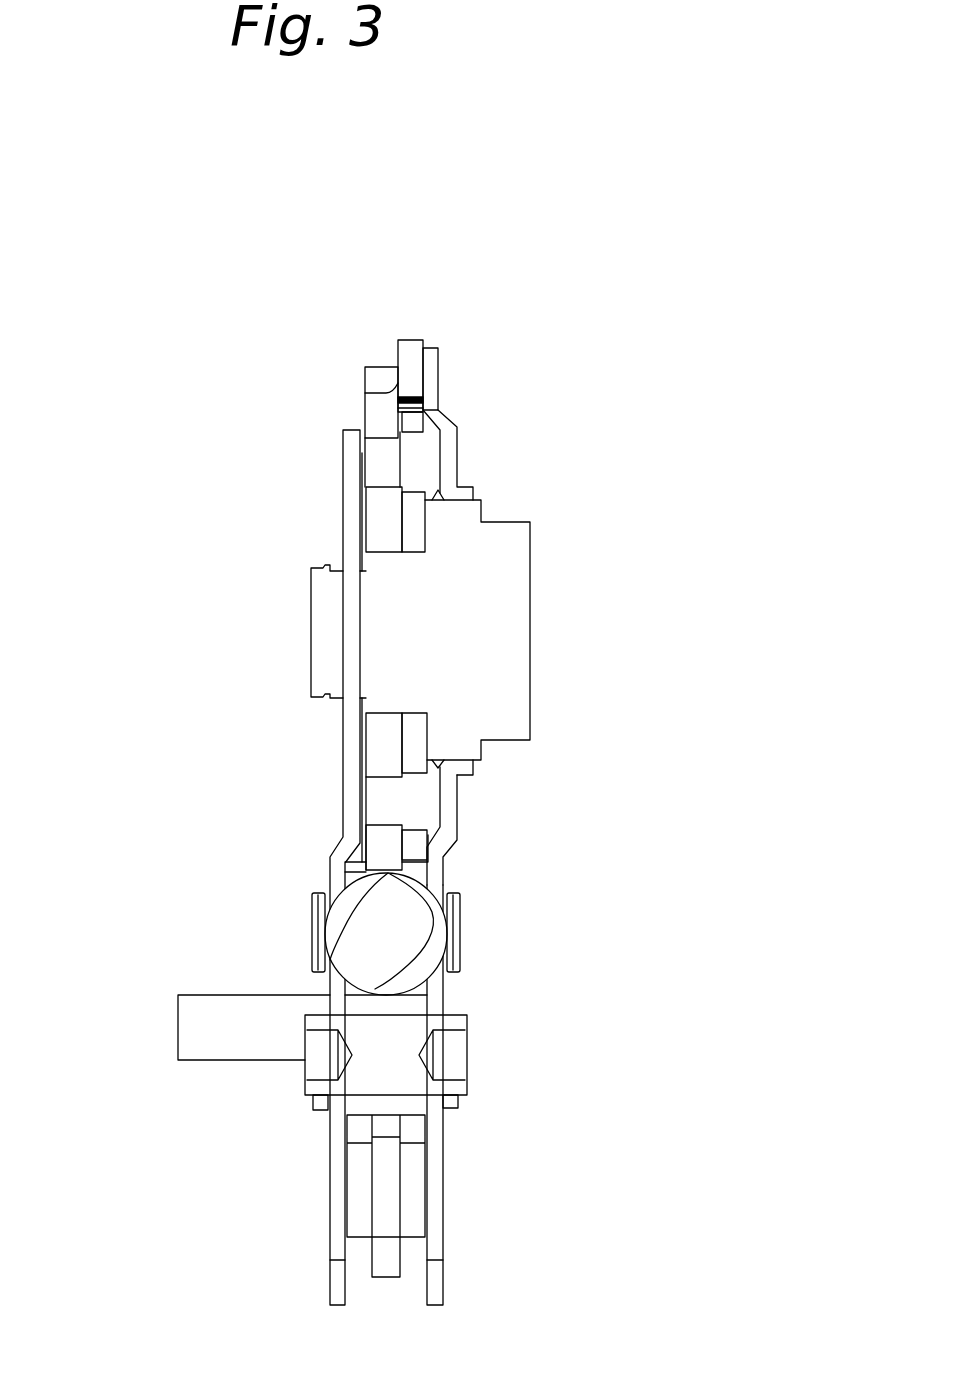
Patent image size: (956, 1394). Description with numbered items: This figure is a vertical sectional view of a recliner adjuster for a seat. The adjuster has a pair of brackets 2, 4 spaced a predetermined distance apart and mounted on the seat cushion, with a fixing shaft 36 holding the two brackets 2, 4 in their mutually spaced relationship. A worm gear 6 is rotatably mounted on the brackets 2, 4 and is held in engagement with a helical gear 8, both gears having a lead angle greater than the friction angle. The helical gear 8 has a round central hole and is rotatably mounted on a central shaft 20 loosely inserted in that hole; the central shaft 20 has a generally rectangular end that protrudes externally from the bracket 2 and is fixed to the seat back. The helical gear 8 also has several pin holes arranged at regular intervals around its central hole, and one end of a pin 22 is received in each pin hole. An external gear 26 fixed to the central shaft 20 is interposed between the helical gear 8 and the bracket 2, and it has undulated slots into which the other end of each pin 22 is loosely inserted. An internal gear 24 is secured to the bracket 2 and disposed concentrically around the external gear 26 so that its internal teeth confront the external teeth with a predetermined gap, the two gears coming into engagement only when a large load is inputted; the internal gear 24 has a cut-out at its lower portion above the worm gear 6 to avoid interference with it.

The bracket 2 is at (435, 1277).
The bracket 4 is at (337, 1263).
The worm gear 6 is at (412, 915).
The helical gear 8 is at (383, 420).
The central shaft 20 is at (482, 598).
The pin 22 is at (413, 463).
The internal gear 24 is at (408, 357).
The external gear 26 is at (424, 408).
The fixing shaft 36 is at (400, 1030).